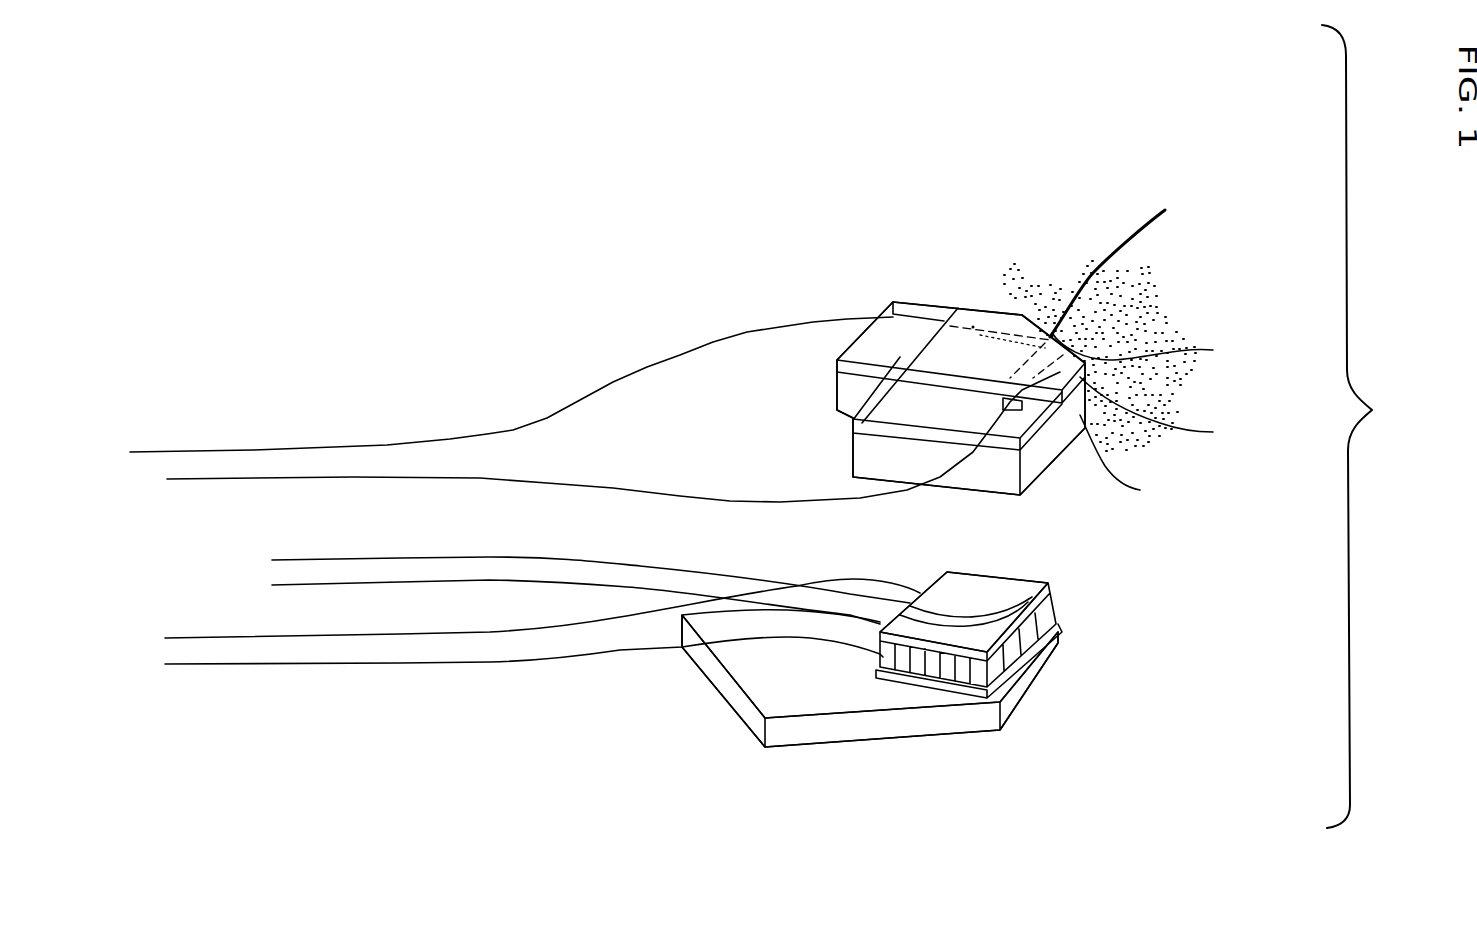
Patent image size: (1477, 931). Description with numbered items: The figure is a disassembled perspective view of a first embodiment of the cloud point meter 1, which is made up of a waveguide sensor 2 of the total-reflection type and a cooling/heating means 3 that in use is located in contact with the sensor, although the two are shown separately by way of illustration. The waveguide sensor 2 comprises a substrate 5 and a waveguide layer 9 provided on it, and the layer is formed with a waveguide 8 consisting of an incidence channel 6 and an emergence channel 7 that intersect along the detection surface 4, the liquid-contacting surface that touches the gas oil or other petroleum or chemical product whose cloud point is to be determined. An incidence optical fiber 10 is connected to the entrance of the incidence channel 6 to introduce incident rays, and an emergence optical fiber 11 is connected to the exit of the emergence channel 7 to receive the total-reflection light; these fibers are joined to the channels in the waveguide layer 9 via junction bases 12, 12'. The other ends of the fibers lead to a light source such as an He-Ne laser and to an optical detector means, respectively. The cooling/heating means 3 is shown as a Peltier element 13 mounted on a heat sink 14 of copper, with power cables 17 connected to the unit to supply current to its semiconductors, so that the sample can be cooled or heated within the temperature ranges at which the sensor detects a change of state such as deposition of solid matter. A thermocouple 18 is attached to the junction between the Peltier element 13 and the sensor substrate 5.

The cloud point meter 1 is at (1359, 426).
The waveguide sensor 2 is at (928, 254).
The cooling/heating means 3 is at (1066, 723).
The detection surface 4 is at (1145, 353).
The substrate 5 is at (1121, 465).
The incidence channel 6 is at (973, 327).
The emergence channel 7 is at (1058, 367).
The waveguide 8 is at (1027, 157).
The waveguide layer 9 is at (1157, 413).
The incidence optical fiber 10 is at (780, 328).
The emergence optical fiber 11 is at (800, 502).
The junction base 12 is at (929, 317).
The junction base 12' is at (969, 476).
The Peltier element 13 is at (1030, 592).
The heat sink 14 is at (830, 690).
The power cables 17 is at (498, 662).
The thermocouple 18 is at (502, 580).